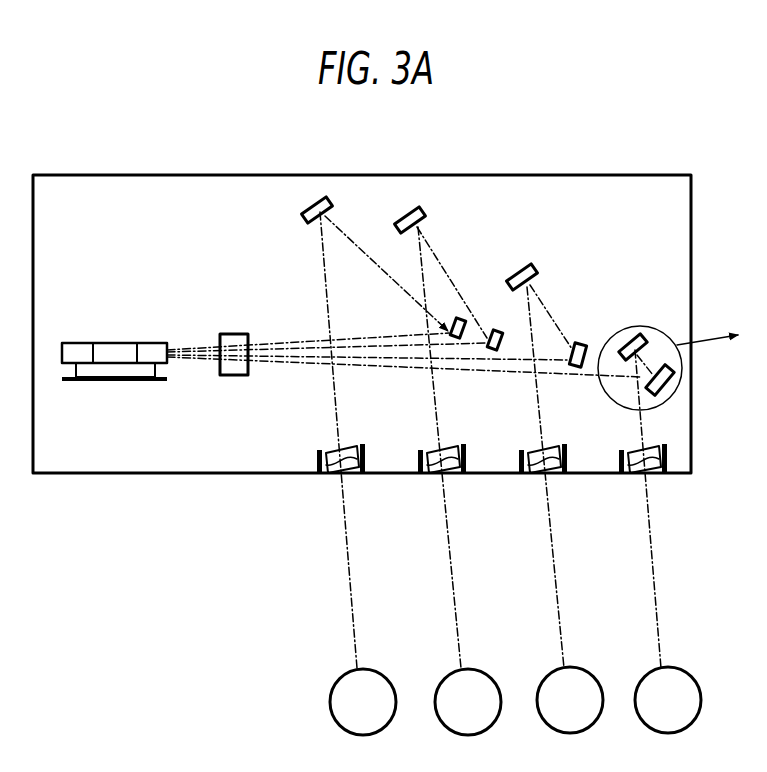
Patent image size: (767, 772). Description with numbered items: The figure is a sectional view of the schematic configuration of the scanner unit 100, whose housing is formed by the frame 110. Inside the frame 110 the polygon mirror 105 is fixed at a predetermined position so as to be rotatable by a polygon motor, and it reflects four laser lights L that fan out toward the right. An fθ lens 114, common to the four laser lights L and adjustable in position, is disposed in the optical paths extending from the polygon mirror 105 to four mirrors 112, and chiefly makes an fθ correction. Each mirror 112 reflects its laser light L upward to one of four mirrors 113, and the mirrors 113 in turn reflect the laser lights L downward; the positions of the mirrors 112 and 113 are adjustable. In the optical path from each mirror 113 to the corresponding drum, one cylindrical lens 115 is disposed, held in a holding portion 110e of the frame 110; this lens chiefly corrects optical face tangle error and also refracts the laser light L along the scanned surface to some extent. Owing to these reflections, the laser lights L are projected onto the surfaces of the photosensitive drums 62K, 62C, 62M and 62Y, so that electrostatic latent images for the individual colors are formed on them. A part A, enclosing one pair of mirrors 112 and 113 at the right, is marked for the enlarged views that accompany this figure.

The scanner unit 100 is at (670, 160).
The frame 110 is at (433, 175).
The polygon mirror 105 is at (112, 343).
The fθ lens 114 is at (231, 333).
The mirror 113 is at (303, 208).
The mirror 112 is at (461, 318).
The cylindrical lens 115 is at (330, 476).
The holding portion 110e is at (357, 476).
The photosensitive drum 62K is at (348, 683).
The photosensitive drum 62C is at (453, 683).
The photosensitive drum 62M is at (554, 681).
The photosensitive drum 62Y is at (652, 681).
The part A is at (668, 357).
The laser light L is at (351, 556).